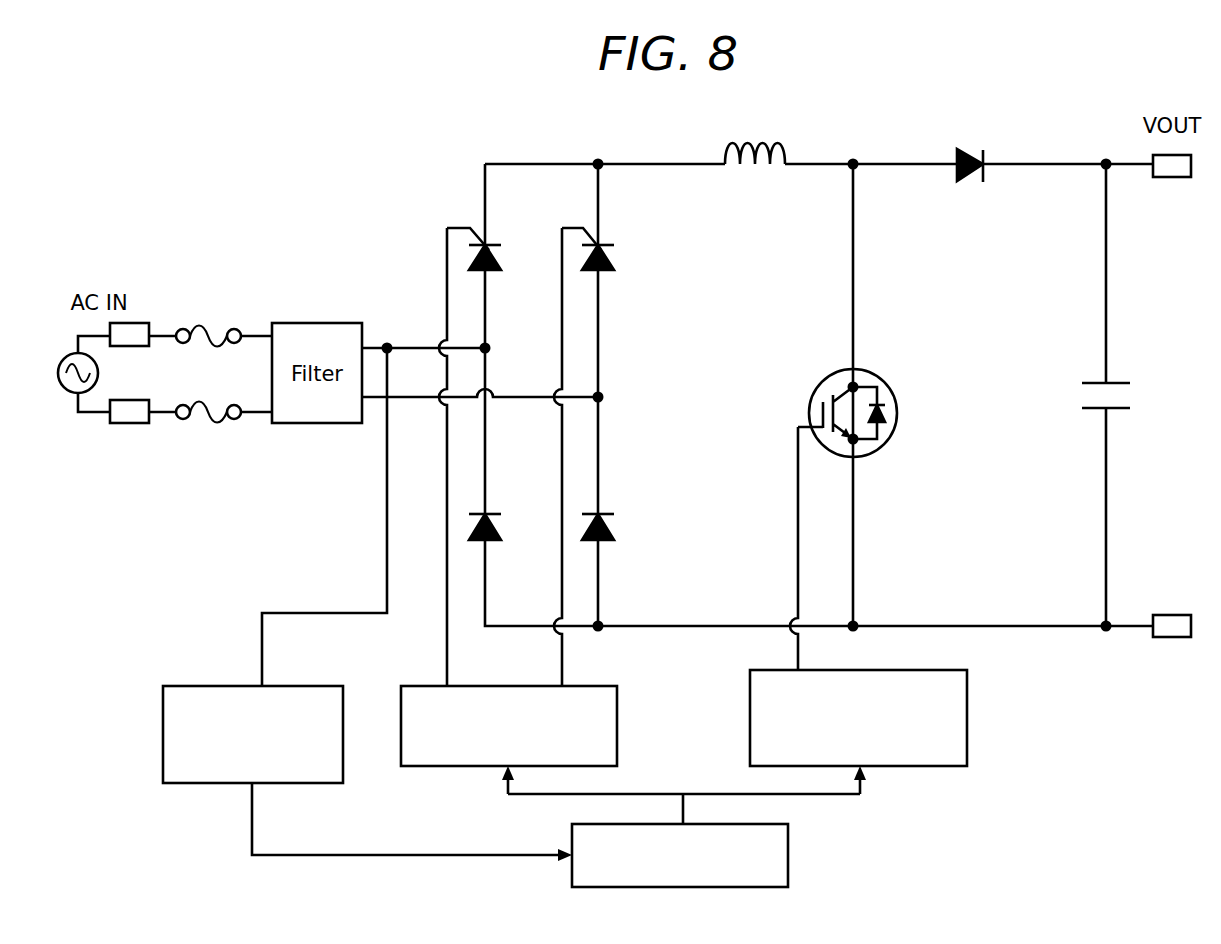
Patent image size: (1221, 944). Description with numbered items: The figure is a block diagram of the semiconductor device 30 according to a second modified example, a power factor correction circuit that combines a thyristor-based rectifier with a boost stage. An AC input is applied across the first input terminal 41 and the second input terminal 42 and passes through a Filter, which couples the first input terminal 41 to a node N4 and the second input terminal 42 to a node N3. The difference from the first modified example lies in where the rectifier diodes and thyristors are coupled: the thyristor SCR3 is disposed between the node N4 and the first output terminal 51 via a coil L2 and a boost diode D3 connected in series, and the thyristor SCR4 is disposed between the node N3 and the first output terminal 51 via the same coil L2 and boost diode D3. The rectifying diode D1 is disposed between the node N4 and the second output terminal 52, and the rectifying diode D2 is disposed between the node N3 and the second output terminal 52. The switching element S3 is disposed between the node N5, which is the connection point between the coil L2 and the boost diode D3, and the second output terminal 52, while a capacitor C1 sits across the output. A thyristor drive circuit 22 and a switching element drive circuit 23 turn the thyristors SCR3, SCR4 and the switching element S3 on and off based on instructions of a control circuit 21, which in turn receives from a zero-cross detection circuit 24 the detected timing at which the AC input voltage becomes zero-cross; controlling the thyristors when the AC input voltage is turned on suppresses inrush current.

The control circuit 21 is at (788, 858).
The thyristor drive circuit 22 is at (617, 717).
The switching element drive circuit 23 is at (967, 717).
The zero-cross detection circuit 24 is at (292, 686).
The semiconductor device 30 is at (389, 197).
The first input terminal 41 is at (142, 323).
The second input terminal 42 is at (133, 423).
The first output terminal 51 is at (1173, 177).
The second output terminal 52 is at (1175, 637).
The thyristor SCR3 is at (502, 263).
The thyristor SCR4 is at (606, 258).
The rectifying diode D1 is at (488, 540).
The rectifying diode D2 is at (601, 540).
The boost diode D3 is at (968, 146).
The coil L2 is at (755, 137).
The capacitor C1 is at (1126, 395).
The switching element S3 is at (897, 393).
The node N3 is at (603, 393).
The node N4 is at (490, 345).
The node N5 is at (857, 158).